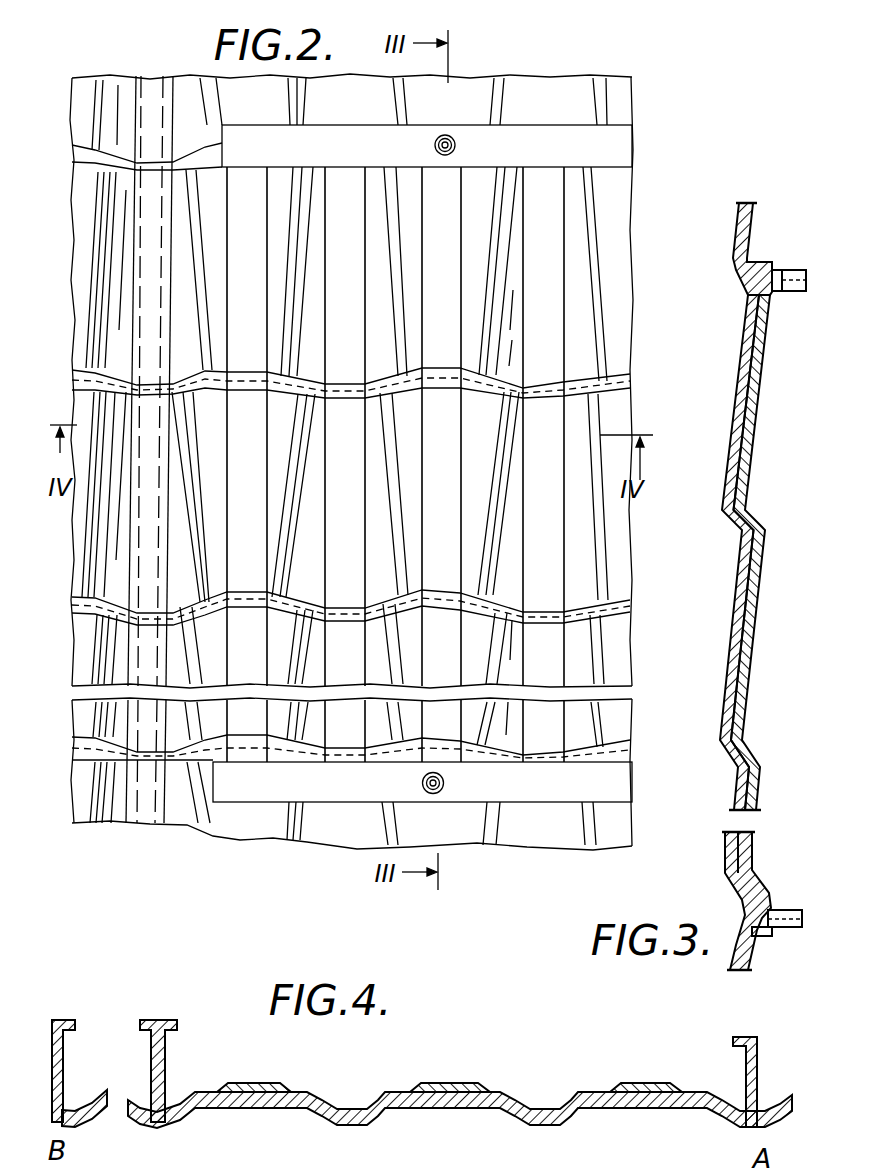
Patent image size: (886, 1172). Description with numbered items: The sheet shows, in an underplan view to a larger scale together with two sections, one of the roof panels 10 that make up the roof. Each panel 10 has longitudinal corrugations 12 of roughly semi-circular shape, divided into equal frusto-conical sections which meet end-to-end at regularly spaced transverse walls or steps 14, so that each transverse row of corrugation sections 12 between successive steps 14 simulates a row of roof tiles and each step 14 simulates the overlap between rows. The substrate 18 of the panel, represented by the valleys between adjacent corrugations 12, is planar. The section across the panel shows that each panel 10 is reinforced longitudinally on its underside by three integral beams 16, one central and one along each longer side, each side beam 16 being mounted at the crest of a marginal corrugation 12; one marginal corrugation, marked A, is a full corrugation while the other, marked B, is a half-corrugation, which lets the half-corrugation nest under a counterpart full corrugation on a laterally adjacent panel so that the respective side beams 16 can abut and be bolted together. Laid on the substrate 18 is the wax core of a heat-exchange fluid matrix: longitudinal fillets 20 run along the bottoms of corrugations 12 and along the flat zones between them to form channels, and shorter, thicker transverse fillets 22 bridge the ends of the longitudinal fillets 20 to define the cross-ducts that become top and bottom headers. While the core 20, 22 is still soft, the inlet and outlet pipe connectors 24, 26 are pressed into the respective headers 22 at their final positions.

In FIG. 4, the panel 10 is at (141, 1101).
In FIG. 2, the longitudinal corrugations 12 is at (193, 218).
In FIG. 4, the longitudinal corrugations 12 is at (73, 1117).
In FIG. 2, the transverse walls or steps 14 is at (622, 392).
In FIG. 3, the transverse walls or steps 14 is at (738, 300).
In FIG. 2, the integral beams 16 is at (178, 92).
In FIG. 4, the integral beams 16 is at (62, 1068).
In FIG. 2, the substrate 18 is at (634, 120).
In FIG. 3, the substrate 18 is at (734, 250).
In FIG. 4, the substrate 18 is at (453, 1113).
In FIG. 2, the longitudinal fillets 20 is at (255, 232).
In FIG. 3, the longitudinal fillets 20 is at (764, 590).
In FIG. 4, the longitudinal fillets 20 is at (258, 1084).
In FIG. 2, the transverse fillets 22 is at (527, 145).
In FIG. 3, the transverse fillets 22 is at (760, 262).
In FIG. 2, the inlet pipe connector 24 is at (450, 786).
In FIG. 3, the inlet pipe connector 24 is at (793, 933).
In FIG. 2, the outlet pipe connector 26 is at (447, 134).
In FIG. 3, the outlet pipe connector 26 is at (790, 292).